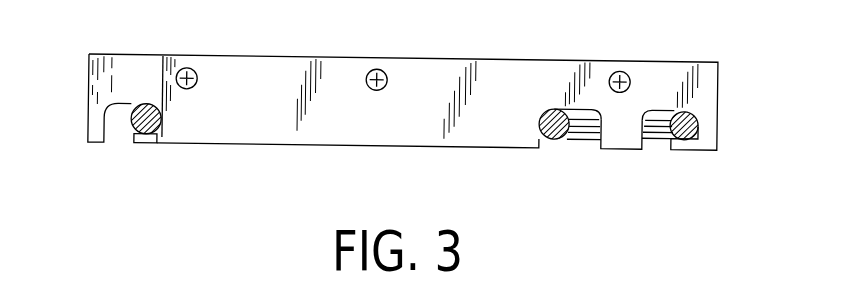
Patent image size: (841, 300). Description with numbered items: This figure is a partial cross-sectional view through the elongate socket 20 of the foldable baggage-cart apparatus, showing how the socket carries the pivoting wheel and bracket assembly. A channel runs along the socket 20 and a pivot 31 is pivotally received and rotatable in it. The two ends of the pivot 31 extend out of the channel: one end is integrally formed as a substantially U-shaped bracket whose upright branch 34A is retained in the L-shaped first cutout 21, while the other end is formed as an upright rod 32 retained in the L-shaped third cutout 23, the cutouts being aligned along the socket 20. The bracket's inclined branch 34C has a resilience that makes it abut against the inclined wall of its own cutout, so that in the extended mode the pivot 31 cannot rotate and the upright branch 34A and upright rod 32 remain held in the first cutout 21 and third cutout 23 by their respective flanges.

The elongate socket 20 is at (423, 67).
The first cutout 21 is at (683, 105).
The third cutout 23 is at (118, 102).
The pivot 31 is at (582, 109).
The upright rod 32 is at (148, 144).
The upright branch 34A is at (689, 141).
The inclined branch 34C is at (558, 140).